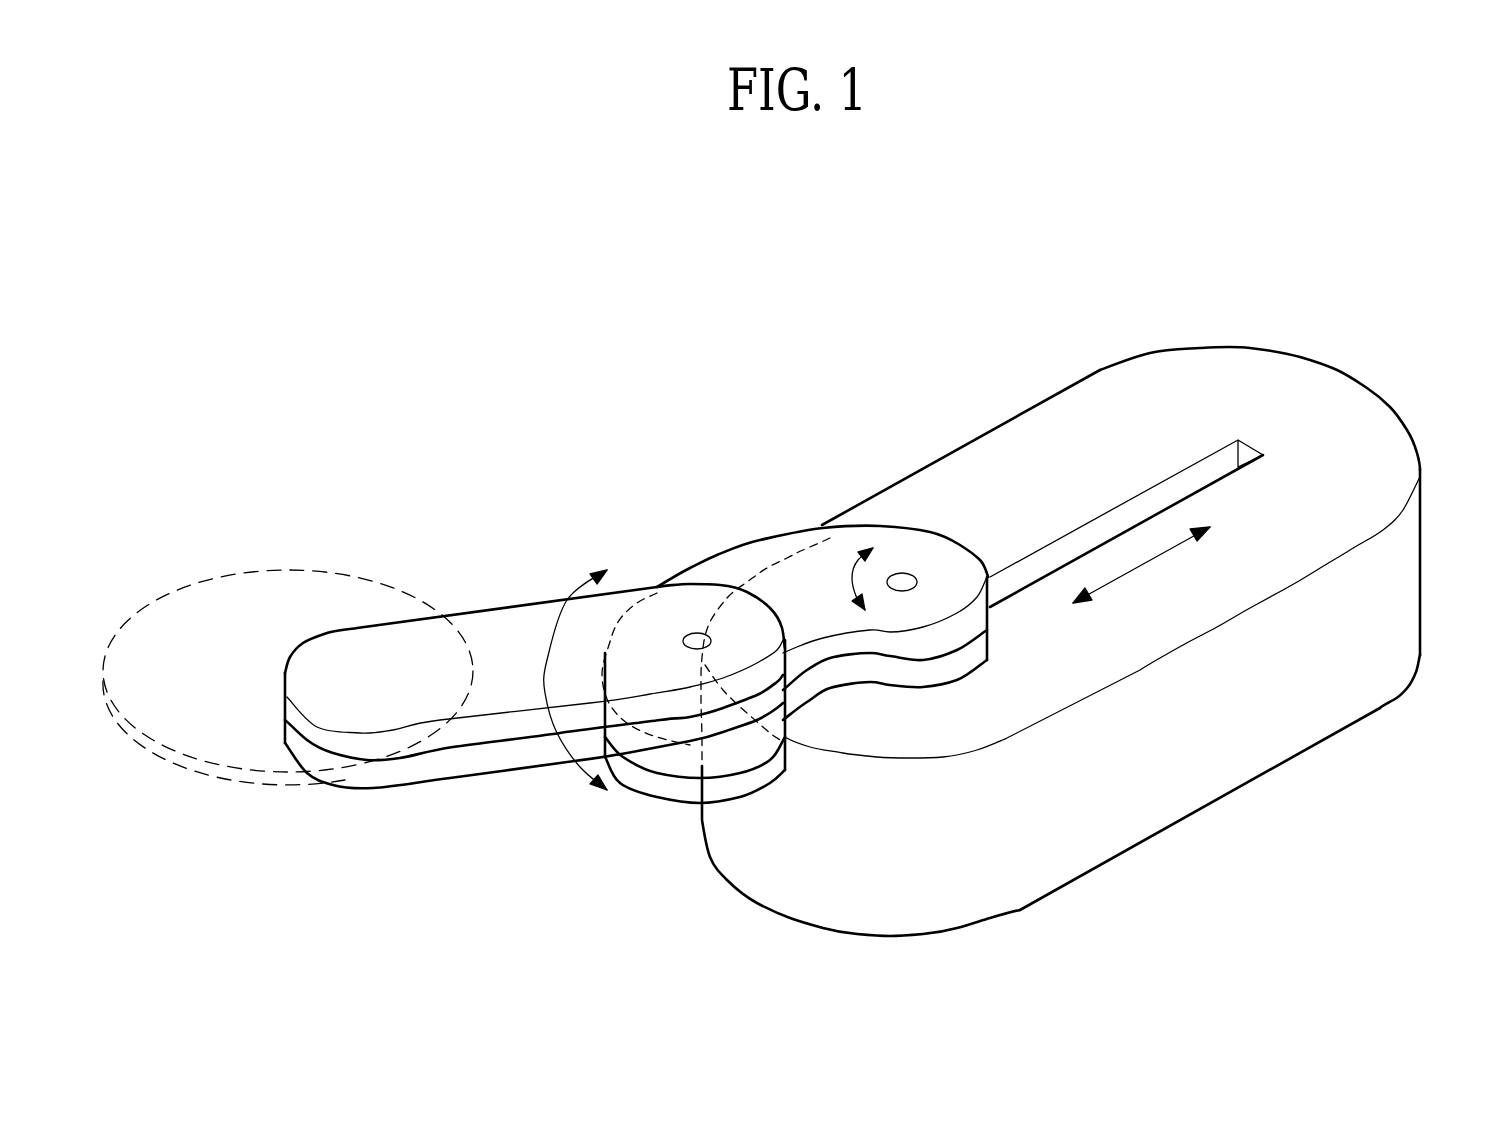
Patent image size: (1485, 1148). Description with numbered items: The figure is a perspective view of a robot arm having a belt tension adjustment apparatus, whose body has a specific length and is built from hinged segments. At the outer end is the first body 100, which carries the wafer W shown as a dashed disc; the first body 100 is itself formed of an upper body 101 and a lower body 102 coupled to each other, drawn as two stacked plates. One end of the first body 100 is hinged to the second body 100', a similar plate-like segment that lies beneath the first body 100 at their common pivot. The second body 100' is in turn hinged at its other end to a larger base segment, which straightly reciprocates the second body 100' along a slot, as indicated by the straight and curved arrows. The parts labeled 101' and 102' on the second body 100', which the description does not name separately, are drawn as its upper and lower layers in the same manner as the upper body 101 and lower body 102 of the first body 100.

The wafer W is at (228, 613).
The first body 100 is at (471, 609).
The upper body 101 is at (535, 599).
The lower body 102 is at (534, 636).
The second body 100' is at (749, 557).
The upper plate of second arm 101' is at (822, 542).
The lower plate of second arm 102' is at (794, 572).